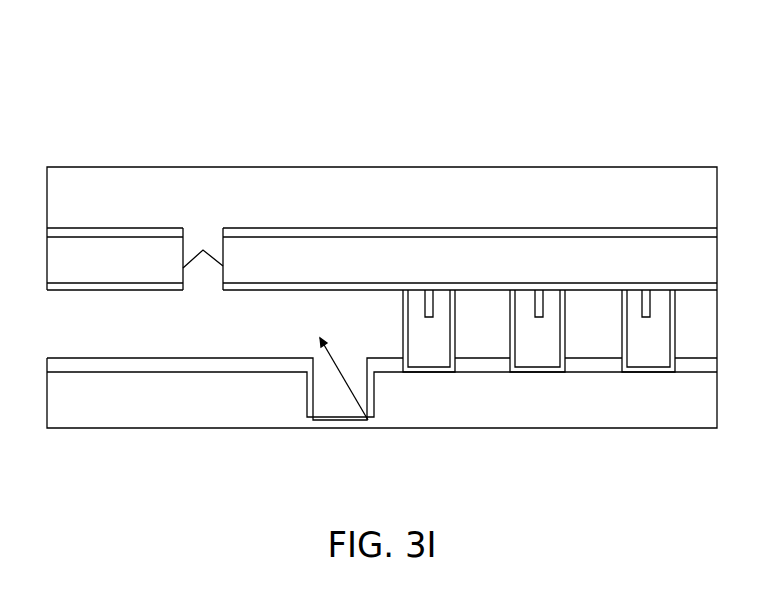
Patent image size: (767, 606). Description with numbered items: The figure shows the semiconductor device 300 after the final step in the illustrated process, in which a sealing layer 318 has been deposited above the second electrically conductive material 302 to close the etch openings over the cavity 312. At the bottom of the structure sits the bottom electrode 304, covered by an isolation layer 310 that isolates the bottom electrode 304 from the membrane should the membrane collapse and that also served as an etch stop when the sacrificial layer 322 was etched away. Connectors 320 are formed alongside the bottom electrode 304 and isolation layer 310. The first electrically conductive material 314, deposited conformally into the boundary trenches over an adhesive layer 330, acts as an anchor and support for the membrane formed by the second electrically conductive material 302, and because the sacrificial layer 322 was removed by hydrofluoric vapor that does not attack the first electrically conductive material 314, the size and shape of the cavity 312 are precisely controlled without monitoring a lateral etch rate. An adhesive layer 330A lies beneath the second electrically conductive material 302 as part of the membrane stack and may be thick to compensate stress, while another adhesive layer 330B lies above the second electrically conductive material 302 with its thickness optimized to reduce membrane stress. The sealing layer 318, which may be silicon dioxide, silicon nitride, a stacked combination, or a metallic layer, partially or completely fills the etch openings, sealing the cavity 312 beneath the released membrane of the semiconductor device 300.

The semiconductor device 300 is at (250, 67).
The second electrically conductive material 302 is at (362, 237).
The bottom electrode 304 is at (160, 428).
The isolation layer 310 is at (257, 372).
The cavity 312 is at (371, 428).
The first electrically conductive material 314 is at (427, 290).
The sealing layer 318 is at (200, 167).
The connectors 320 is at (625, 428).
The sacrificial layer 322 is at (288, 290).
The adhesive layer 330 is at (457, 317).
The adhesive layer 330A is at (597, 283).
The adhesive layer 330B is at (99, 228).